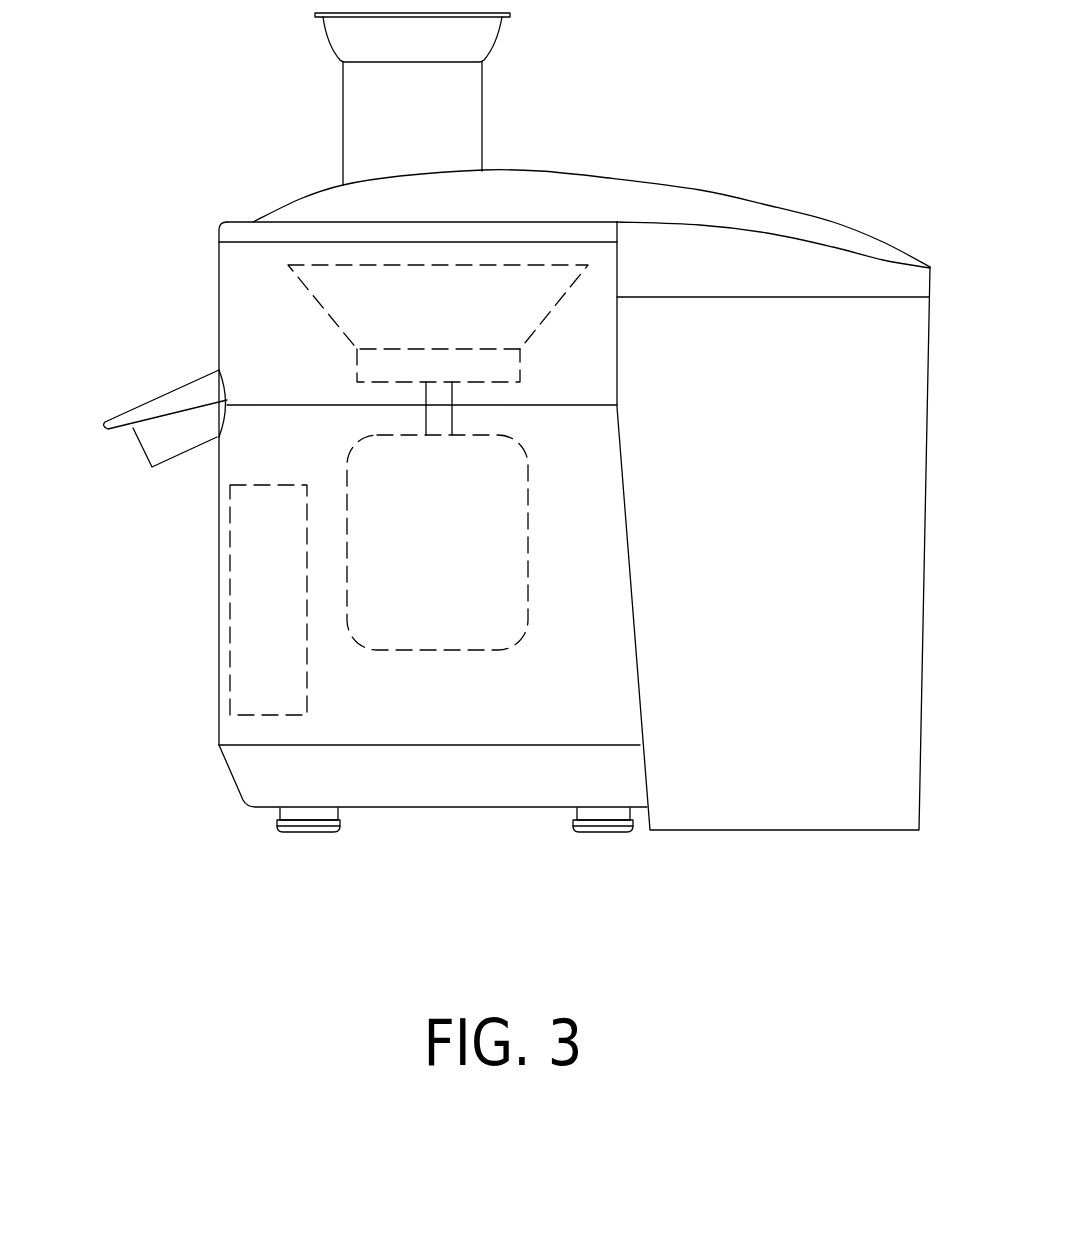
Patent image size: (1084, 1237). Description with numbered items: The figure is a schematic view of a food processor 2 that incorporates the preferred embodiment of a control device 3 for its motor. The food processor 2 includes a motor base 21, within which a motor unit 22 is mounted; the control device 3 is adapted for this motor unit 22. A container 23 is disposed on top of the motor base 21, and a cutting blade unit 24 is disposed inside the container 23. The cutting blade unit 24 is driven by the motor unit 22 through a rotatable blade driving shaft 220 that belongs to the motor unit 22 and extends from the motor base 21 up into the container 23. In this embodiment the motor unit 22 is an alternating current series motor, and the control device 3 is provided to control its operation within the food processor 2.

The food processor 2 is at (857, 224).
The motor base 21 is at (532, 782).
The motor unit 22 is at (413, 613).
The rotatable blade driving shaft 220 is at (438, 420).
The container 23 is at (288, 265).
The cutting blade unit 24 is at (363, 332).
The control device 3 is at (250, 645).